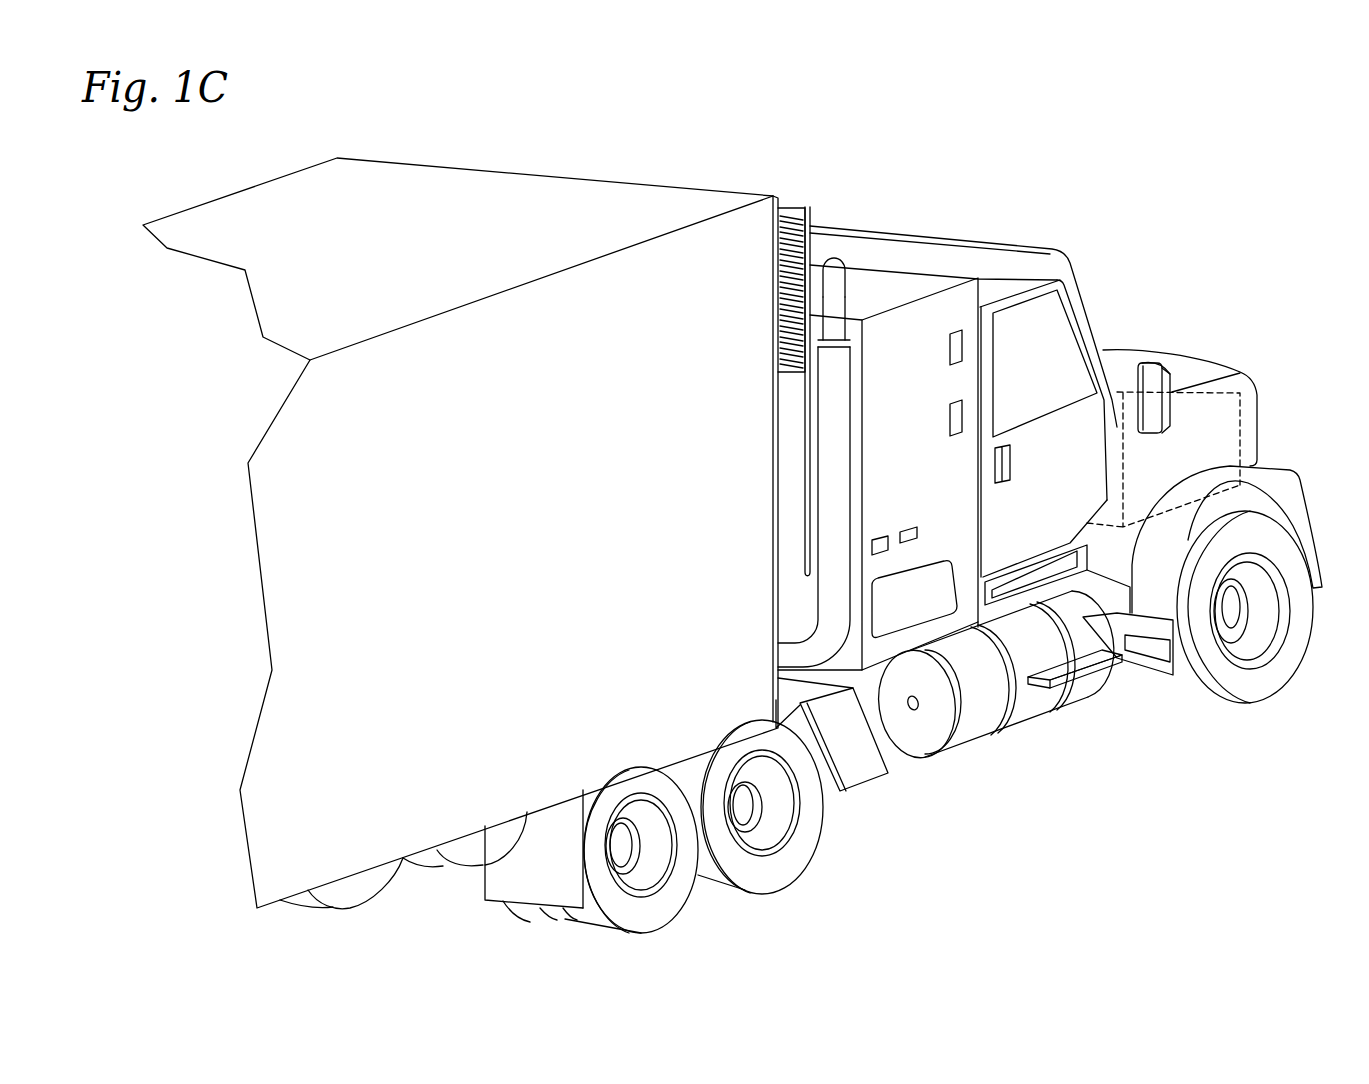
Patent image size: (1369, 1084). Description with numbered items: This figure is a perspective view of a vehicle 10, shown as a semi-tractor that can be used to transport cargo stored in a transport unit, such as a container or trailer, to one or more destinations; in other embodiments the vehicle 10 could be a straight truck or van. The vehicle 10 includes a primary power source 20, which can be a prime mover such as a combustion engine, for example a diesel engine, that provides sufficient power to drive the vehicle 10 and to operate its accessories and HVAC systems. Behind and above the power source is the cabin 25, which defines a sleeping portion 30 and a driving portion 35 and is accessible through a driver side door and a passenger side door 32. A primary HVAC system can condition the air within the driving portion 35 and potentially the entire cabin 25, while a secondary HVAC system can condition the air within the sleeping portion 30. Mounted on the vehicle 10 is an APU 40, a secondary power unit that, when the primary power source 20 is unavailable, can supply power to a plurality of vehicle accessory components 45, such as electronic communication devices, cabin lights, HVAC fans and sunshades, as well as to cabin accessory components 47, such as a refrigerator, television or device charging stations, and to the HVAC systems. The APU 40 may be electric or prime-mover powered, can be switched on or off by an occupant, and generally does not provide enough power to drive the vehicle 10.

The vehicle 10 is at (983, 157).
The primary power source 20 is at (1217, 392).
The cabin 25 is at (1078, 272).
The sleeping portion 30 is at (887, 283).
The passenger side door 32 is at (1090, 418).
The driving portion 35 is at (1018, 226).
The APU 40 is at (857, 762).
The vehicle accessory components 45 is at (963, 403).
The cabin accessory components 47 is at (880, 556).